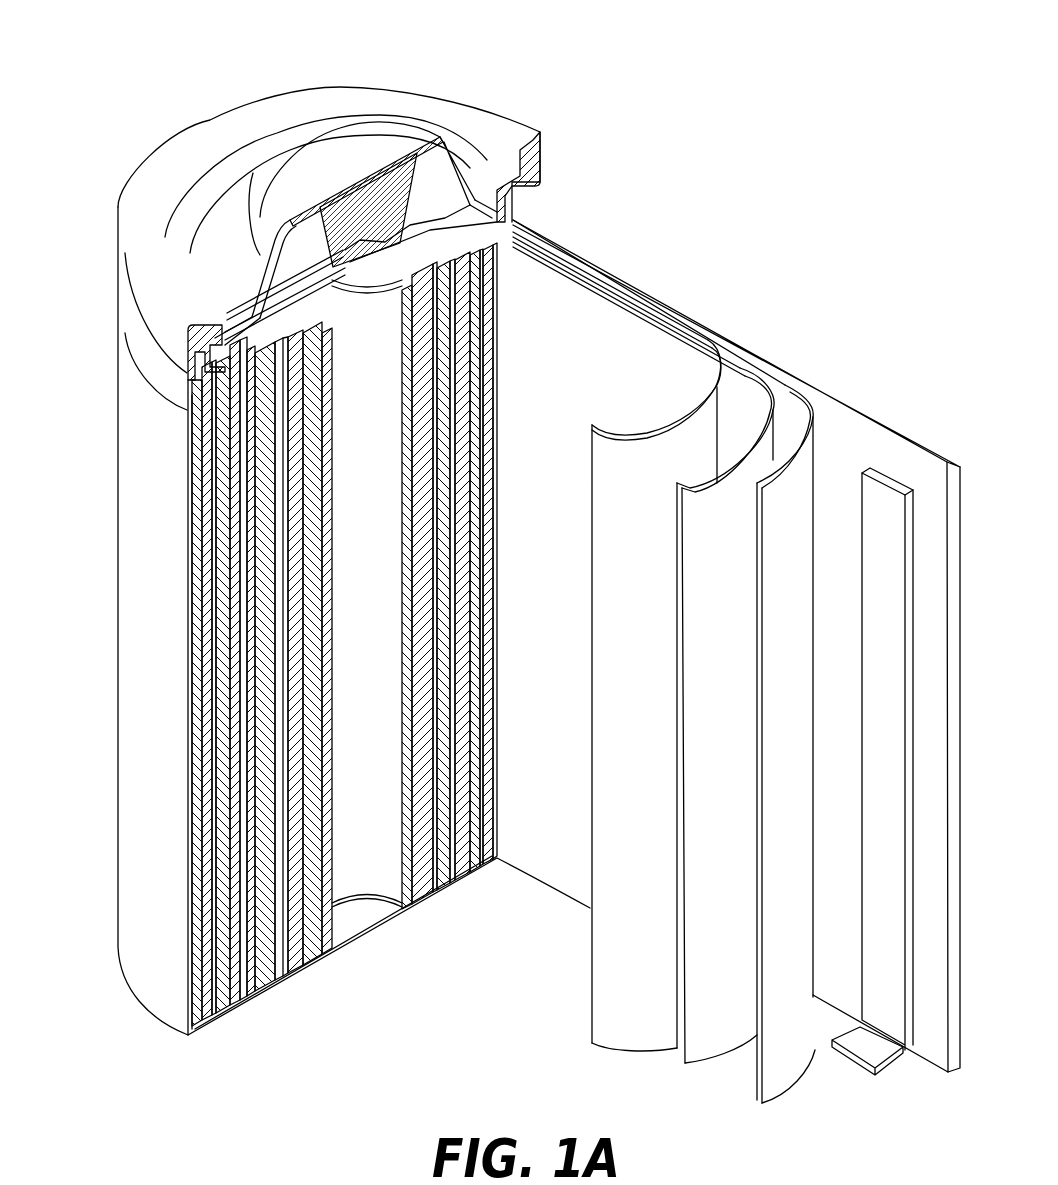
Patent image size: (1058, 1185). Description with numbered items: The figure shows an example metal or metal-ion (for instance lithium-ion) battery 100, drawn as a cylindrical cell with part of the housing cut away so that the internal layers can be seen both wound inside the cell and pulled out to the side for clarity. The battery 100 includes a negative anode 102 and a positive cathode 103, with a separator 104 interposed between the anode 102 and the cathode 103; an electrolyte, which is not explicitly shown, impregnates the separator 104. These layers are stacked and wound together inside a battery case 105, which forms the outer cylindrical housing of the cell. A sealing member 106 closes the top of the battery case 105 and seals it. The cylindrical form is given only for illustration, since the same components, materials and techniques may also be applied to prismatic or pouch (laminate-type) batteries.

The battery 100 is at (766, 92).
The anode 102 is at (713, 360).
The cathode 103 is at (808, 418).
The separator 104 is at (748, 415).
The battery case 105 is at (138, 603).
The sealing member 106 is at (345, 130).